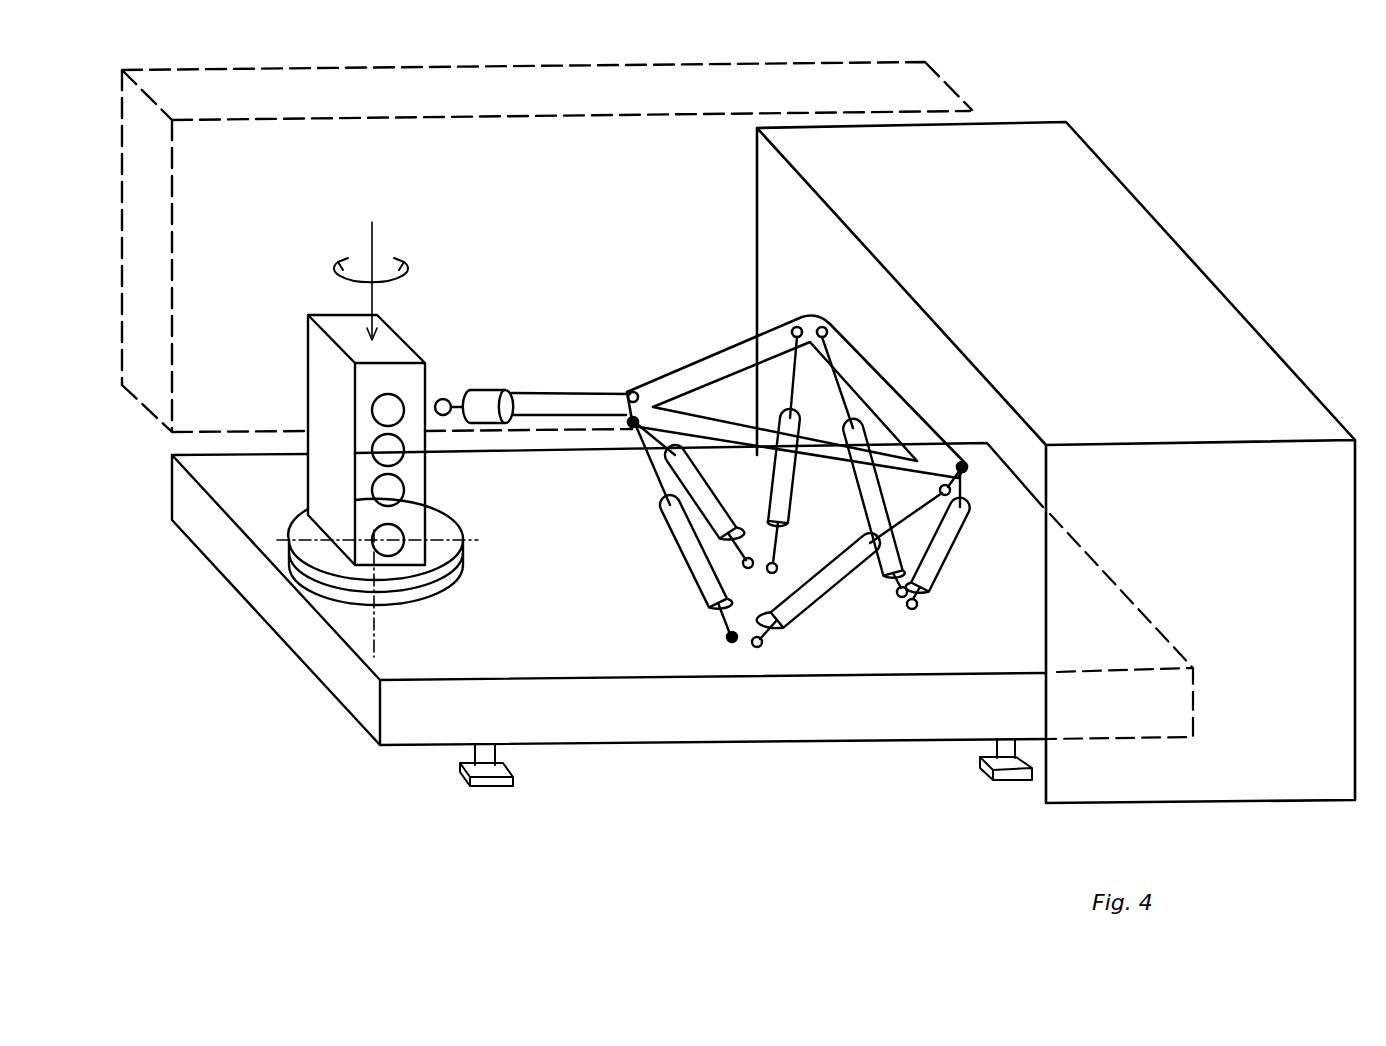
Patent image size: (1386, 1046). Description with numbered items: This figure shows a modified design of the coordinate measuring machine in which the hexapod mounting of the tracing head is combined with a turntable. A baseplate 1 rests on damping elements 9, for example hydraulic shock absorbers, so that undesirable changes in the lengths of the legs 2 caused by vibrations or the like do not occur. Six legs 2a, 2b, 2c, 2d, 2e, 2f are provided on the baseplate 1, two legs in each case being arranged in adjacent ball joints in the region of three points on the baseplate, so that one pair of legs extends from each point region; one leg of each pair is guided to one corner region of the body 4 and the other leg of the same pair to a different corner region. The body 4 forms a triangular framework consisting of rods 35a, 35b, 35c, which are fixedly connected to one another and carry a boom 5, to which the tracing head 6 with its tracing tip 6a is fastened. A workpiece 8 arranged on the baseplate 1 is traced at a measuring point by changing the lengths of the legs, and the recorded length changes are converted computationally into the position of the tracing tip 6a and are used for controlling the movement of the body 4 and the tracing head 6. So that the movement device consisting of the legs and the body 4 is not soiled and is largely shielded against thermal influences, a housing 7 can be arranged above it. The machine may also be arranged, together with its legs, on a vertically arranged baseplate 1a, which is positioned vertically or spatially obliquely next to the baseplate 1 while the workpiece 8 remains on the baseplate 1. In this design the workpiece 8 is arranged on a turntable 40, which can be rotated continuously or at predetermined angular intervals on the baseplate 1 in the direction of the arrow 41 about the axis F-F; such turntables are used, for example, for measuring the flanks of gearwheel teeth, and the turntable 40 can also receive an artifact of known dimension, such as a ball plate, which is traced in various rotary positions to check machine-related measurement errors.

The baseplate 1 is at (605, 727).
The vertically arranged baseplate 1a is at (405, 103).
The legs 2 is at (676, 623).
The leg 2a is at (685, 540).
The leg 2b is at (812, 598).
The leg 2c is at (932, 553).
The leg 2d is at (872, 500).
The leg 2e is at (780, 472).
The leg 2f is at (688, 462).
The body 4 is at (789, 390).
The rod 35a is at (738, 438).
The rod 35b is at (867, 382).
The rod 35c is at (707, 372).
The boom 5 is at (545, 393).
The tracing head 6 is at (488, 388).
The tracing tip 6a is at (443, 398).
The housing 7 is at (771, 198).
The workpiece 8 is at (350, 330).
The damping elements 9 is at (500, 781).
The turntable 40 is at (447, 530).
The arrow 41 is at (403, 281).